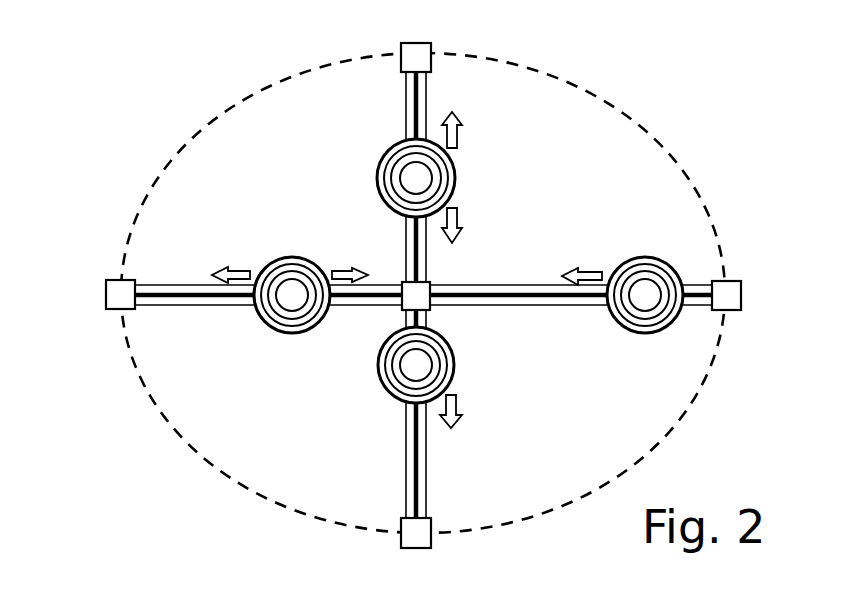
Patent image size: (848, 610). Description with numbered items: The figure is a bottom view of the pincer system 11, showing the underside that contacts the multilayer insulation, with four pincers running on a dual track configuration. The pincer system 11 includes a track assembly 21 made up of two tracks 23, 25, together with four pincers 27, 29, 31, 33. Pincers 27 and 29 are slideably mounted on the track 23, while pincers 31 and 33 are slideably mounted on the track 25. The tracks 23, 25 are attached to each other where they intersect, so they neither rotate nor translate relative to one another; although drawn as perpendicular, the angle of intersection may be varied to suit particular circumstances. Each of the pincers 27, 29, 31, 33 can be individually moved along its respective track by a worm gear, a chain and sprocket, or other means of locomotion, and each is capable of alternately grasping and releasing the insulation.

The pincer system 11 is at (150, 124).
The track assembly 21 is at (508, 238).
The track 23 is at (192, 306).
The track 25 is at (406, 112).
The pincer 27 is at (277, 268).
The pincer 29 is at (672, 262).
The pincer 31 is at (450, 383).
The pincer 33 is at (456, 178).